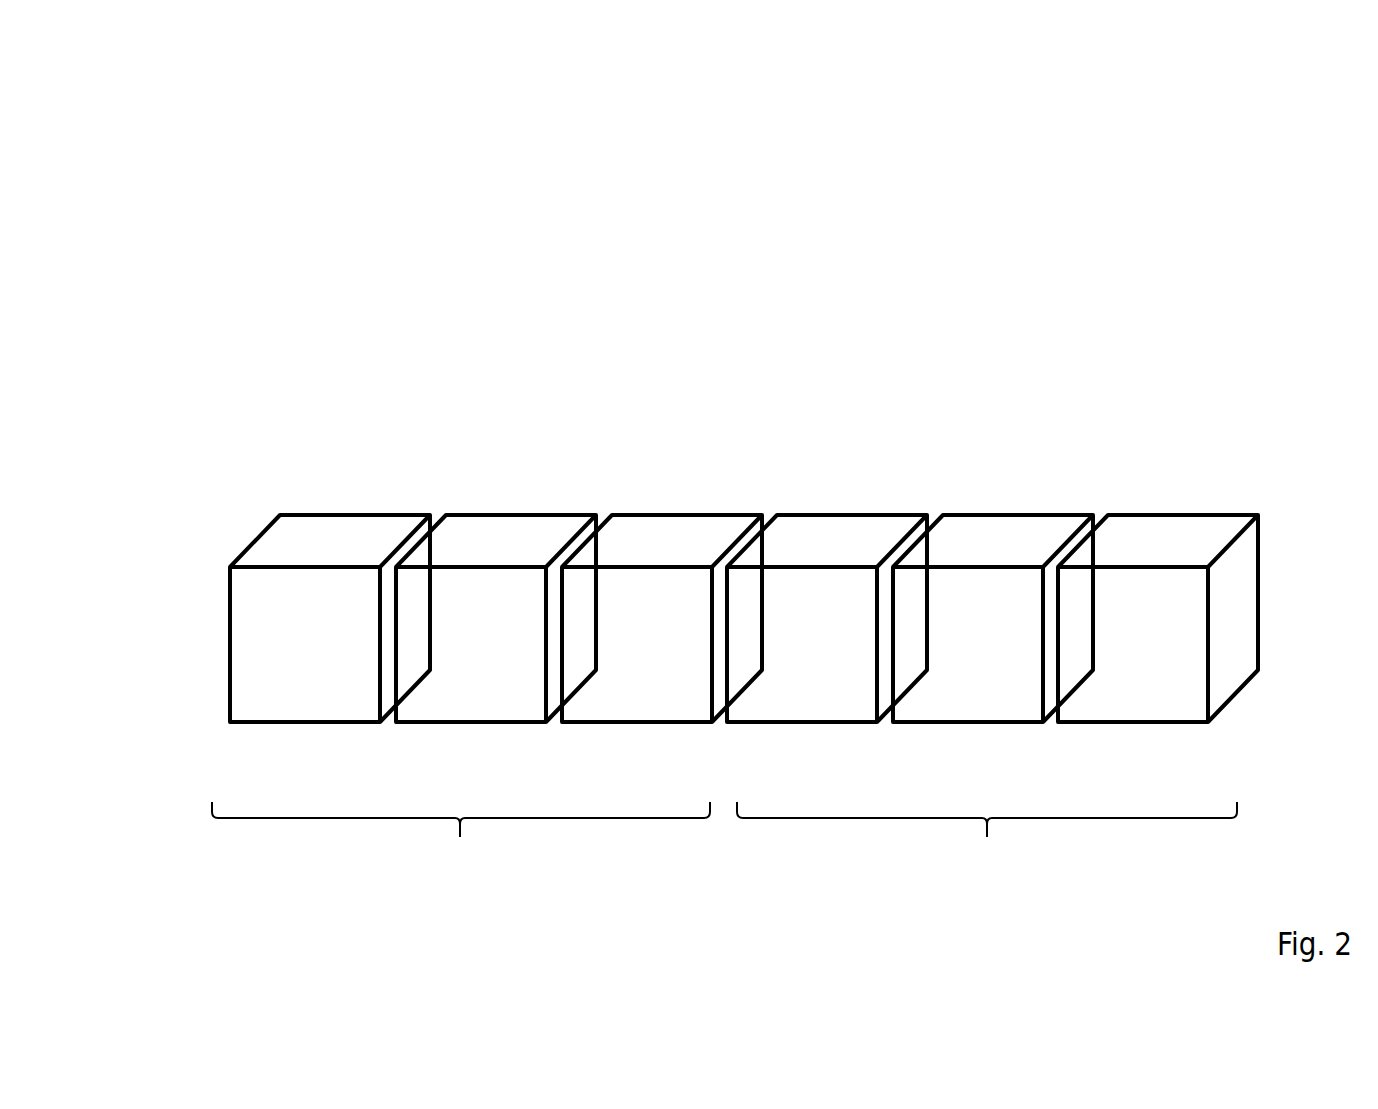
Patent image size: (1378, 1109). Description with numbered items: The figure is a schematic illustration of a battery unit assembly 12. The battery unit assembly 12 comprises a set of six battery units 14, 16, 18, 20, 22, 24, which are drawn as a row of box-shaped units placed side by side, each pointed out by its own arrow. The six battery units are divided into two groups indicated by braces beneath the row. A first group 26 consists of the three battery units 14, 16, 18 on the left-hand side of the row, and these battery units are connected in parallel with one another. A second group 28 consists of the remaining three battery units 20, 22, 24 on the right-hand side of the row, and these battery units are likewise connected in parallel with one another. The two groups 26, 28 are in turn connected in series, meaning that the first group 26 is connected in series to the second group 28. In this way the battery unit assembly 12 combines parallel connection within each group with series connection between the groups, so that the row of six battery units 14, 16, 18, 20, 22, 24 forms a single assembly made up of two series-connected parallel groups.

The battery unit assembly 12 is at (302, 136).
The battery unit 14 is at (337, 468).
The battery unit 16 is at (517, 468).
The battery unit 18 is at (688, 468).
The battery unit 20 is at (848, 468).
The battery unit 22 is at (1018, 468).
The battery unit 24 is at (1197, 468).
The first group 26 is at (461, 853).
The second group 28 is at (987, 853).